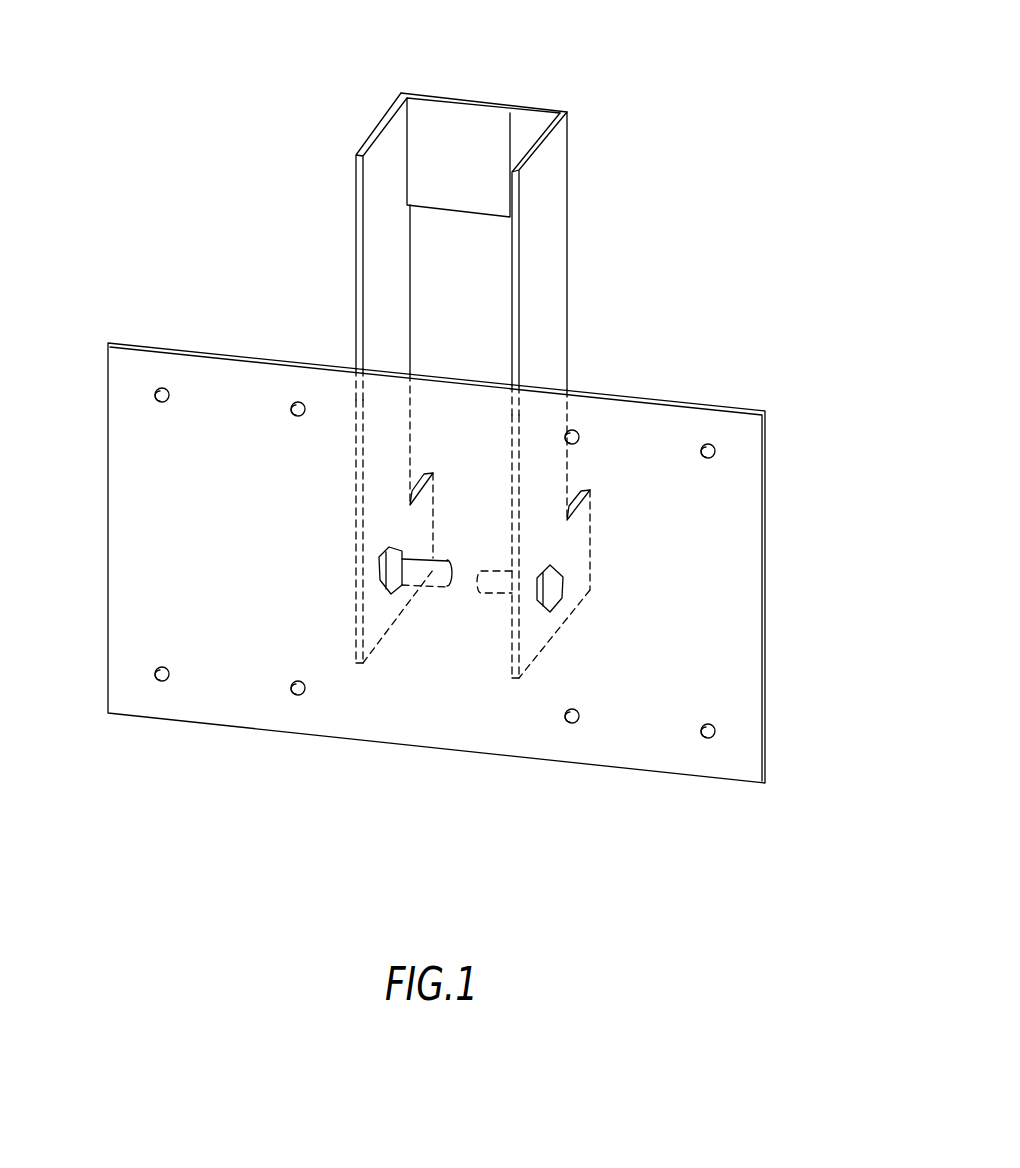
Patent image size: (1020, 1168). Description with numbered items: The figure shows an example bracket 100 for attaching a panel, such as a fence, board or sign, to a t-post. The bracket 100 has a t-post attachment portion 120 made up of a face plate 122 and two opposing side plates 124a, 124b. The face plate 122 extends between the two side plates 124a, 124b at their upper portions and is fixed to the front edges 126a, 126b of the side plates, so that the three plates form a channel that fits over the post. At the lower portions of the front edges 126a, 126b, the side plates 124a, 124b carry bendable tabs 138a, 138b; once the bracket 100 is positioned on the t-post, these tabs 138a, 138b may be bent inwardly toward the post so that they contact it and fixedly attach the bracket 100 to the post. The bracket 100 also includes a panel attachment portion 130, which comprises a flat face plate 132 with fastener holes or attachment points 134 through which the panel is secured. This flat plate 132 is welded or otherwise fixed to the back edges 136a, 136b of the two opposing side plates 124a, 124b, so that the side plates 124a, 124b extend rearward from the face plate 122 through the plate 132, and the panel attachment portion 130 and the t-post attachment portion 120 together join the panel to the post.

The bracket 100 is at (205, 80).
The t-post attachment portion 120 is at (603, 223).
The face plate 122 is at (470, 130).
The side plate 124a is at (356, 312).
The side plate 124b is at (560, 312).
The front edge 126a is at (362, 148).
The front edge 126b is at (568, 167).
The panel attachment portion 130 is at (777, 533).
The face plate 132 is at (738, 670).
The fastener holes 134 is at (709, 444).
The back edge 136a is at (338, 498).
The back edge 136b is at (575, 541).
The bendable tab 138a is at (441, 474).
The bendable tab 138b is at (603, 491).